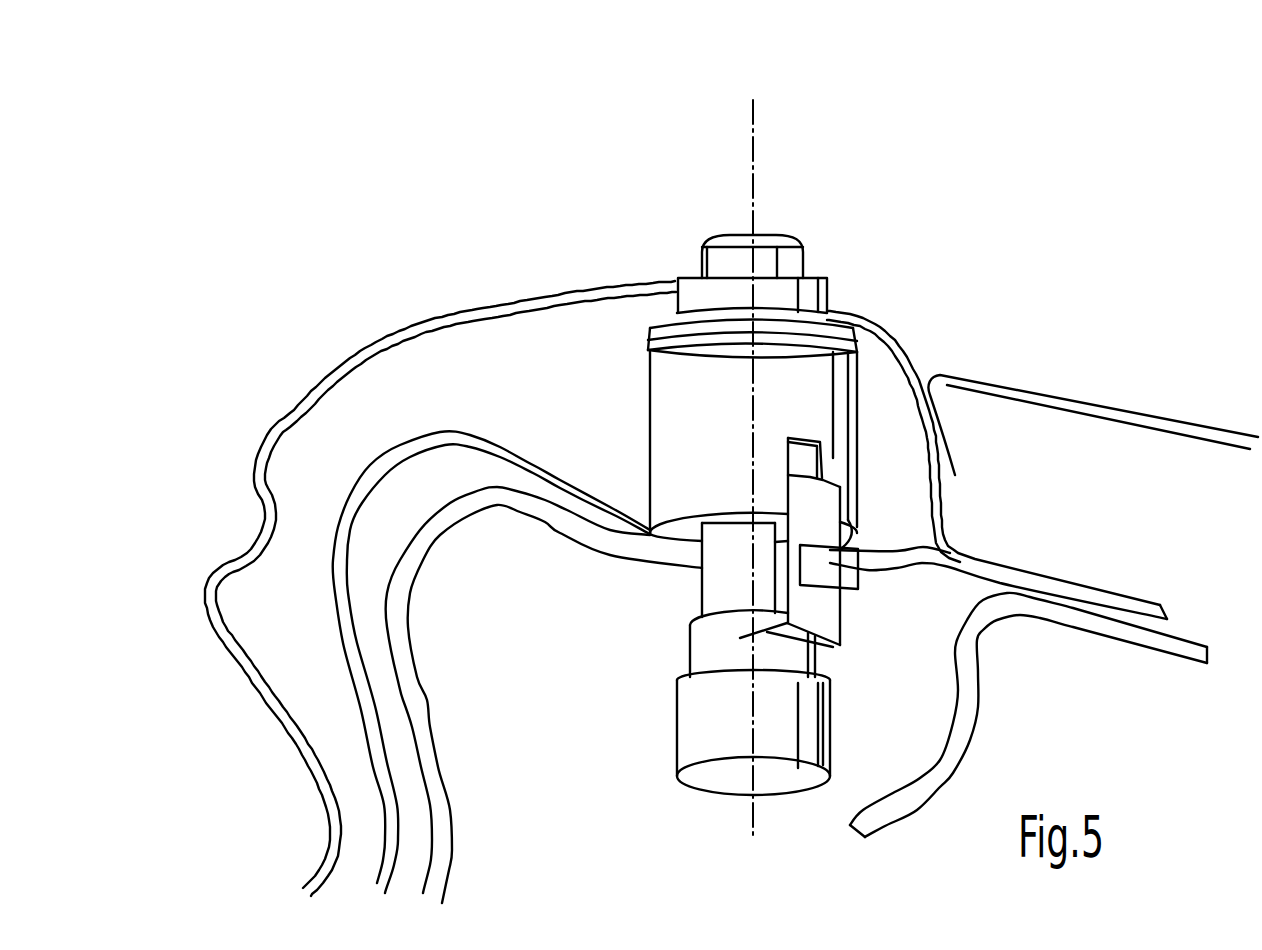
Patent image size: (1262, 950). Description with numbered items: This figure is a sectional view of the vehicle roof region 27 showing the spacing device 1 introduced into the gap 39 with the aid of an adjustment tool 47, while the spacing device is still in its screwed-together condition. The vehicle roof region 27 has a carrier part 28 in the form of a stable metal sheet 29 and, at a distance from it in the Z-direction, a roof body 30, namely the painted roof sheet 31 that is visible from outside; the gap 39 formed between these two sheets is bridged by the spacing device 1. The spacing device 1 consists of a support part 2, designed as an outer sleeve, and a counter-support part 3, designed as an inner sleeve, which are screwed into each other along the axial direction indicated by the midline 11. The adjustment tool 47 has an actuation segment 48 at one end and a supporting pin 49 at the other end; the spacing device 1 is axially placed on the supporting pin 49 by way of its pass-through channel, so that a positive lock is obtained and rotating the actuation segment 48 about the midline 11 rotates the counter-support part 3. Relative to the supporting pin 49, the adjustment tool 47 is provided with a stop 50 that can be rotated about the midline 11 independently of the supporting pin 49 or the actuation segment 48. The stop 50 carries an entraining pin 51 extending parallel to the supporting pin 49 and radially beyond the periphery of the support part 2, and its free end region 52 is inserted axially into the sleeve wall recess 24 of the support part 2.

The spacing device 1 is at (640, 362).
The support part 2 is at (665, 466).
The counter-support part 3 is at (703, 302).
The midline 11 is at (755, 122).
The sleeve wall recess 24 is at (800, 460).
The vehicle roof region 27 is at (1040, 286).
The carrier part 28 is at (417, 550).
The stable metal sheet 29 is at (497, 505).
The roof body 30 is at (490, 306).
The painted roof sheet 31 is at (553, 293).
The gap 39 is at (560, 427).
The adjustment tool 47 is at (680, 666).
The actuation segment 48 is at (673, 738).
The supporting pin 49 is at (803, 268).
The stop 50 is at (848, 608).
The entraining pin 51 is at (857, 578).
The free end region 52 is at (817, 508).